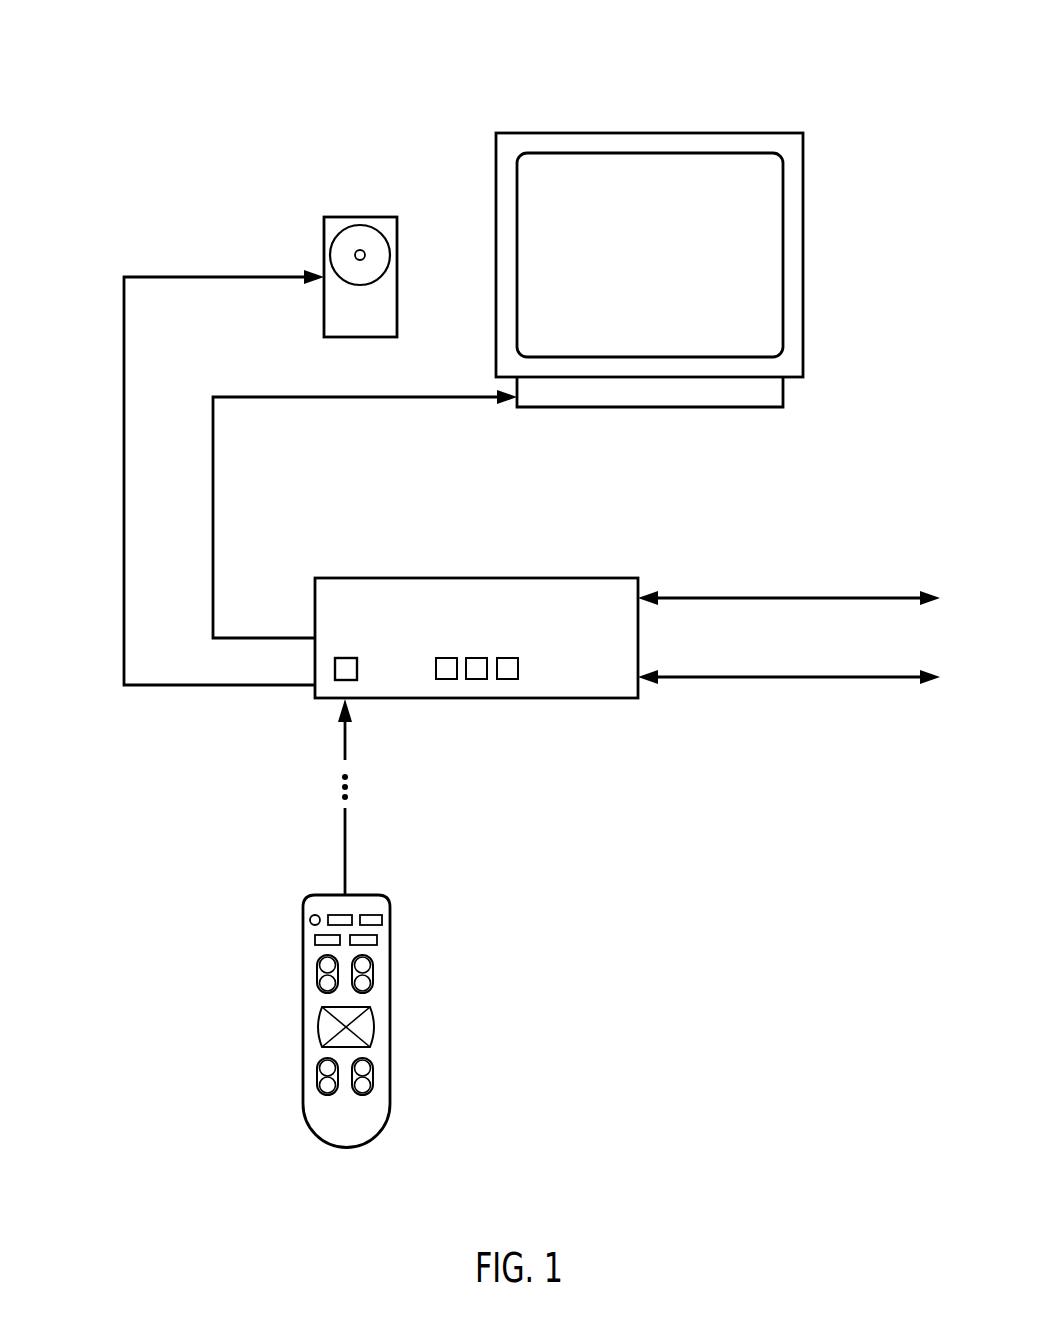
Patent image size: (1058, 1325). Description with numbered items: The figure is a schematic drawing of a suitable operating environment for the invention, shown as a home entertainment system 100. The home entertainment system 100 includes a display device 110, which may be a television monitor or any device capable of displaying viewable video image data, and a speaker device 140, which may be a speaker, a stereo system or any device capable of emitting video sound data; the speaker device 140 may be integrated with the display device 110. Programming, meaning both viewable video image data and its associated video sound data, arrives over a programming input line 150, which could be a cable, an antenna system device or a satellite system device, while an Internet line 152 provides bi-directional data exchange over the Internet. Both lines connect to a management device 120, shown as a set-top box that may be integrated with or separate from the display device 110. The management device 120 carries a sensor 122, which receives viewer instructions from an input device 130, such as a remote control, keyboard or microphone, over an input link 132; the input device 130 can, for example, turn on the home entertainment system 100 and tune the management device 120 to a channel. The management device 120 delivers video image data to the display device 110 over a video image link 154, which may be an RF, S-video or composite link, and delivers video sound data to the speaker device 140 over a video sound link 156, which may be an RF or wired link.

The home entertainment system 100 is at (783, 72).
The display device 110 is at (772, 341).
The management device 120 is at (632, 688).
The sensor 122 is at (357, 668).
The input device 130 is at (366, 1139).
The input link 132 is at (345, 853).
The speaker device 140 is at (377, 321).
The programming input line 150 is at (690, 598).
The Internet line 152 is at (690, 677).
The video image link 154 is at (213, 493).
The video sound link 156 is at (124, 447).